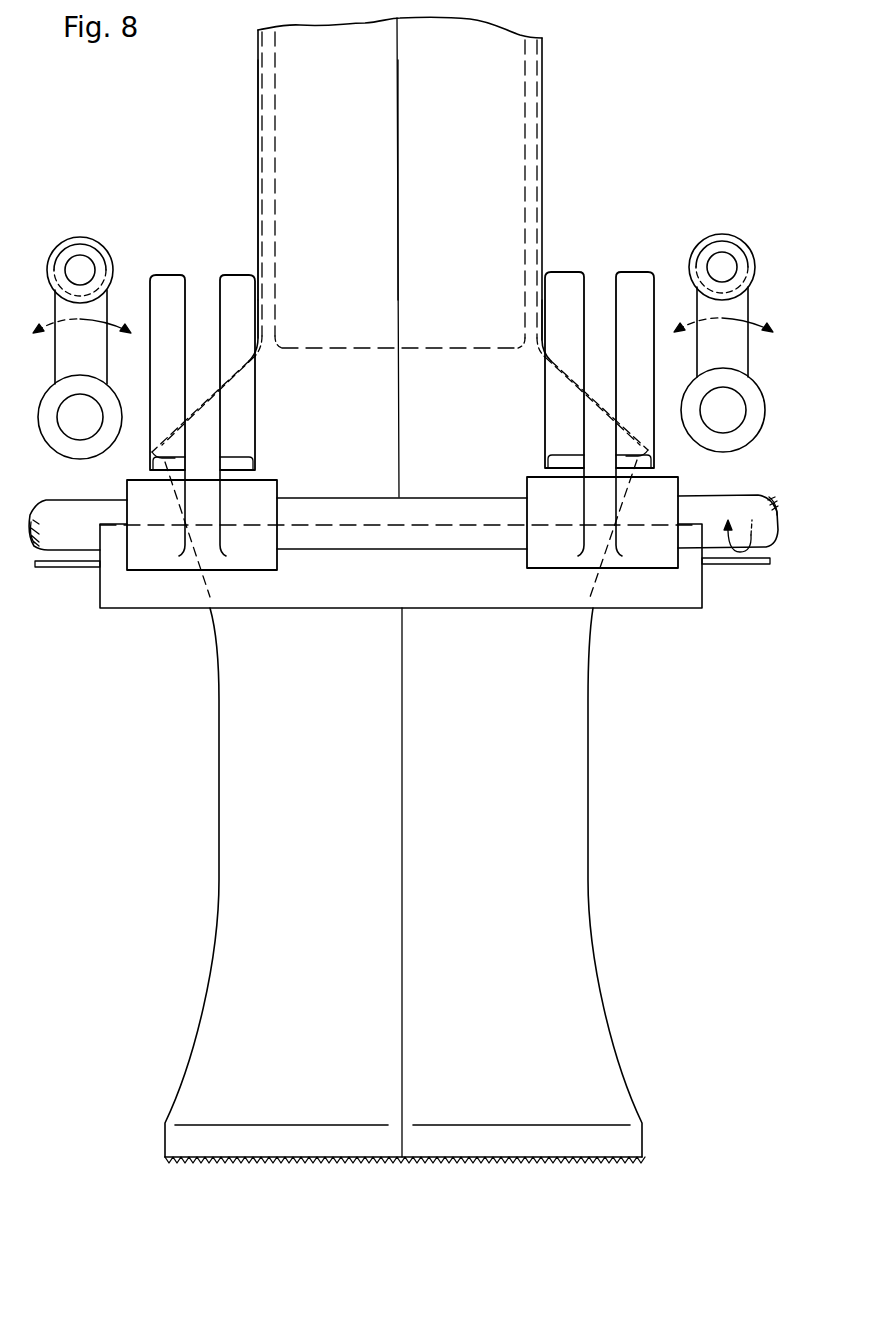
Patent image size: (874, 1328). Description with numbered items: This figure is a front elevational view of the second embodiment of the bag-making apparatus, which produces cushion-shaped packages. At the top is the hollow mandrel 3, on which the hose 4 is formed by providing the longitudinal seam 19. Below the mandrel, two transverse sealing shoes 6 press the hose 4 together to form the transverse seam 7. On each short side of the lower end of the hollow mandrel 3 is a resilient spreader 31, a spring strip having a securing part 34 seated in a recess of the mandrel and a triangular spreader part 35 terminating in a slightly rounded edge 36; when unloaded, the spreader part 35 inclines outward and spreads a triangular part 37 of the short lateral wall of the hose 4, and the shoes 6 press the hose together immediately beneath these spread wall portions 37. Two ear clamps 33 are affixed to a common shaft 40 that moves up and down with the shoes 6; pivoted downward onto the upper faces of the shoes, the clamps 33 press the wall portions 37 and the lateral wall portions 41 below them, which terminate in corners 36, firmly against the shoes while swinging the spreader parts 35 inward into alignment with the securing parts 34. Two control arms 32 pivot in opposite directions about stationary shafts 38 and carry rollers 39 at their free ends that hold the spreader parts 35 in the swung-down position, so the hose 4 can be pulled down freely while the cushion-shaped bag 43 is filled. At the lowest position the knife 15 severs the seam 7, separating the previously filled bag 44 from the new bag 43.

The hollow mandrel 3 is at (532, 115).
The hose 4 is at (542, 155).
The transverse sealing shoes 6 is at (680, 592).
The transverse seam 7 is at (180, 1142).
The knife 15 is at (735, 563).
The longitudinal seam 19 is at (398, 230).
The spreader 31 is at (243, 359).
The control arms 32 is at (73, 348).
The ear clamps 33 is at (165, 288).
The securing part 34 is at (260, 253).
The spreader part 35 is at (160, 448).
The rounded edge 36 is at (147, 458).
The triangular part of the short lateral wall 37 is at (202, 402).
The stationary shafts 38 is at (73, 423).
The rollers 39 is at (72, 238).
The common shaft 40 is at (765, 540).
The lateral wall portions 41 is at (200, 555).
The cushion-shaped bag 43 is at (258, 115).
The filled bag 44 is at (218, 835).